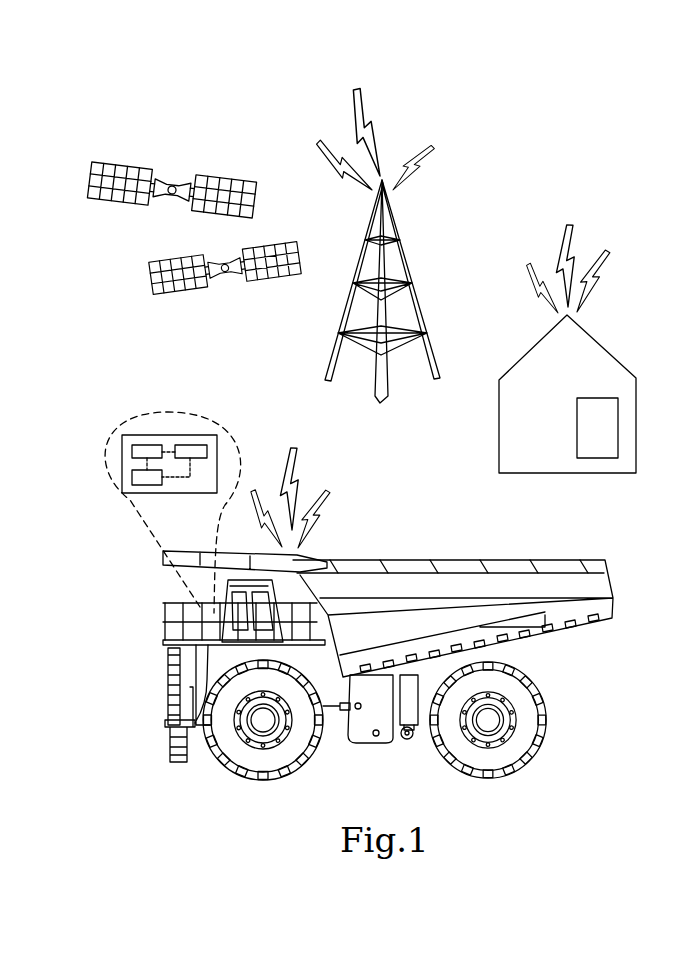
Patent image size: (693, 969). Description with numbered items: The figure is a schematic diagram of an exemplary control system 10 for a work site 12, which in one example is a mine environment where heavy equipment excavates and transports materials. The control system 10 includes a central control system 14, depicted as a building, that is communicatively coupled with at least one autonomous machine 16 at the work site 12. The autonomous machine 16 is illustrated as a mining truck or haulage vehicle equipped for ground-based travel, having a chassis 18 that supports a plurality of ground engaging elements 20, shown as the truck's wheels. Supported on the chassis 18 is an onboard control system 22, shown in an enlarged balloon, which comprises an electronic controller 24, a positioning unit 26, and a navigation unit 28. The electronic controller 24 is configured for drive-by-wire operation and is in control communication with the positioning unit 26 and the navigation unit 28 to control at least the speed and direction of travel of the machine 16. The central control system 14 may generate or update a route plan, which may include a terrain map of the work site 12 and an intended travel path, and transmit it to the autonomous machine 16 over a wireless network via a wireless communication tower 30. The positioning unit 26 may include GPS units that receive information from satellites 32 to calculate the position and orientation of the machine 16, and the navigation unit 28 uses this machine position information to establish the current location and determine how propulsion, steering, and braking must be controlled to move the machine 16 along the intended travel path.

The control system 10 is at (510, 171).
The work site 12 is at (363, 489).
The central control system 14 is at (578, 398).
The autonomous machine 16 is at (405, 590).
The chassis 18 is at (337, 693).
The ground engaging elements 20 is at (276, 768).
The control system 22 is at (173, 499).
The electronic controller 24 is at (137, 445).
The positioning unit 26 is at (201, 445).
The navigation unit 28 is at (137, 485).
The wireless communication tower 30 is at (410, 262).
The satellites 32 is at (172, 182).